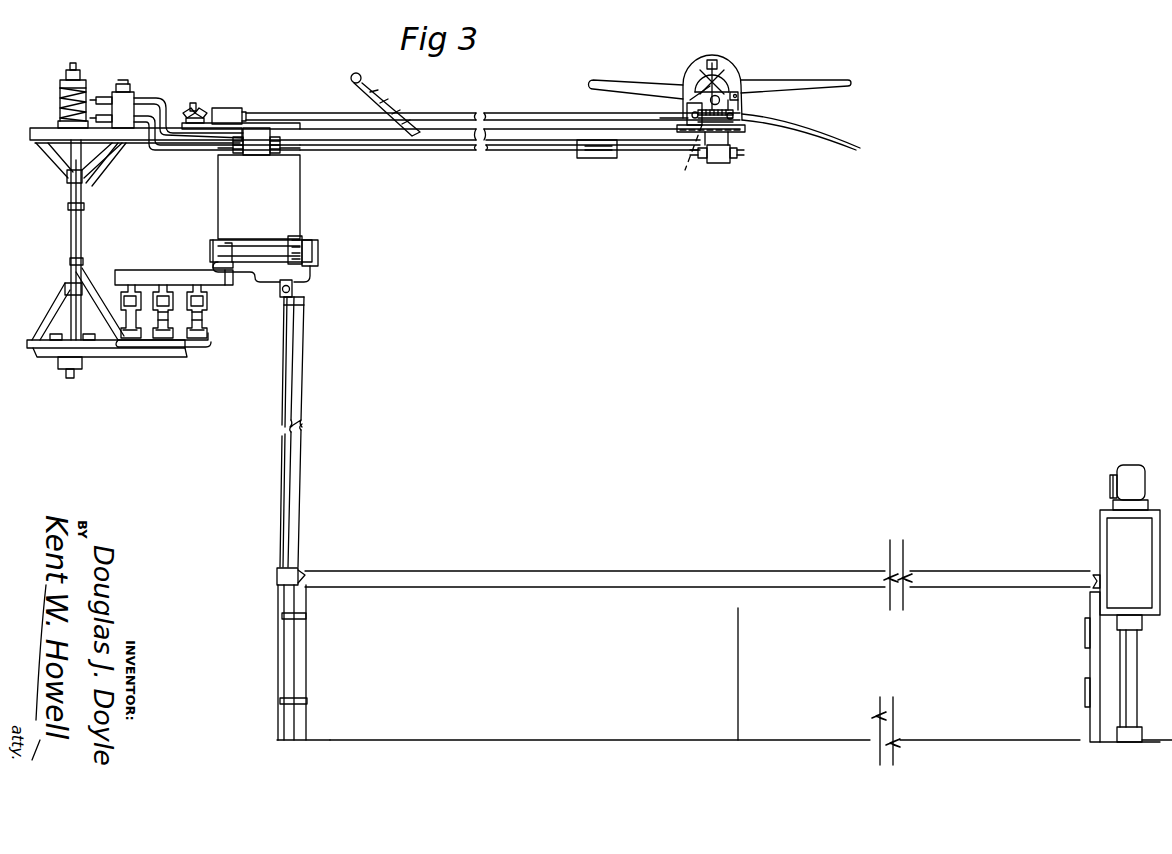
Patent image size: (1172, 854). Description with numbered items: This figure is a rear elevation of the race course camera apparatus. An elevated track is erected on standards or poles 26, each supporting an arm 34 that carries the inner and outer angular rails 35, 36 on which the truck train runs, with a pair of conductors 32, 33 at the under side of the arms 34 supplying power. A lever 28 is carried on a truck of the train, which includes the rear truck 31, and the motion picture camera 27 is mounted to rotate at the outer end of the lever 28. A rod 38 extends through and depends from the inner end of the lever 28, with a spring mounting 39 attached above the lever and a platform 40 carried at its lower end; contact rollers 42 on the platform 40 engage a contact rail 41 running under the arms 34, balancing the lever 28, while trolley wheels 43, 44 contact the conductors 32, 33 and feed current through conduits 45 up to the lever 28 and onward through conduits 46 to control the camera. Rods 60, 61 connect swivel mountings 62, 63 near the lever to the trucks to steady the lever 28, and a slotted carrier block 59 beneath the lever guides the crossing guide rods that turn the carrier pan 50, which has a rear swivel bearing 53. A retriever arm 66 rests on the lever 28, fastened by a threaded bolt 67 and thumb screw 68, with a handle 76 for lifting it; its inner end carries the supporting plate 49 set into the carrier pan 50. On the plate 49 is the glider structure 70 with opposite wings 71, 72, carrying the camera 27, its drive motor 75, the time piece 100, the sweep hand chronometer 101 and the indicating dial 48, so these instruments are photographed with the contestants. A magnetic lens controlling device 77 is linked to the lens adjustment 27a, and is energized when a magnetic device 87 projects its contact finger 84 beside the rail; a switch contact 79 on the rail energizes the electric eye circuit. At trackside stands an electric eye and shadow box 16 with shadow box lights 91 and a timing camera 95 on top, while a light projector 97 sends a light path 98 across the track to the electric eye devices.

The electric eye and shadow box 16 is at (1098, 546).
The standards or poles 26 is at (298, 466).
The motion picture camera 27 is at (716, 86).
The lens adjustment 27a is at (684, 99).
The lever 28 is at (31, 150).
The truck 31 is at (282, 181).
The conductor 32 is at (160, 288).
The conductor 33 is at (196, 288).
The arms 34 is at (128, 270).
The inner angular rail 35 is at (306, 240).
The outer angular rail 36 is at (204, 250).
The rod 38 is at (68, 238).
The spring mounting 39 is at (57, 105).
The platform 40 is at (54, 348).
The contact rail 41 is at (124, 289).
The contact rollers 42 is at (126, 312).
The trolley wheel 43 is at (166, 302).
The trolley wheel 44 is at (209, 306).
The conduits 45 is at (104, 181).
The conduits 46 is at (268, 112).
The indicating dial 48 is at (692, 90).
The supporting plate 49 is at (700, 140).
The carrier pan 50 is at (744, 129).
The swivel bearing 53 is at (720, 164).
The slotted carrier block 59 is at (598, 160).
The rod 60 is at (168, 124).
The rod 61 is at (160, 96).
The swivel mounting 62 is at (125, 125).
The swivel mounting 63 is at (122, 90).
The retriever arm 66 is at (507, 130).
The threaded bolt 67 is at (203, 98).
The thumb screw 68 is at (243, 108).
The glider structure 70 is at (745, 112).
The wing 71 is at (609, 80).
The wing 72 is at (840, 82).
The drive motor 75 is at (700, 126).
The handle 76 is at (355, 70).
The magnetic lens controlling device 77 is at (745, 106).
The switch contact 79 is at (298, 240).
The contact finger 84 is at (296, 286).
The magnetic device 87 is at (318, 256).
The shadow box lights 91 is at (1106, 528).
The timing camera 95 is at (1124, 470).
The light projector 97 is at (292, 574).
The light path 98 is at (578, 571).
The time piece 100 is at (726, 94).
The sweep hand chronometer 101 is at (712, 84).